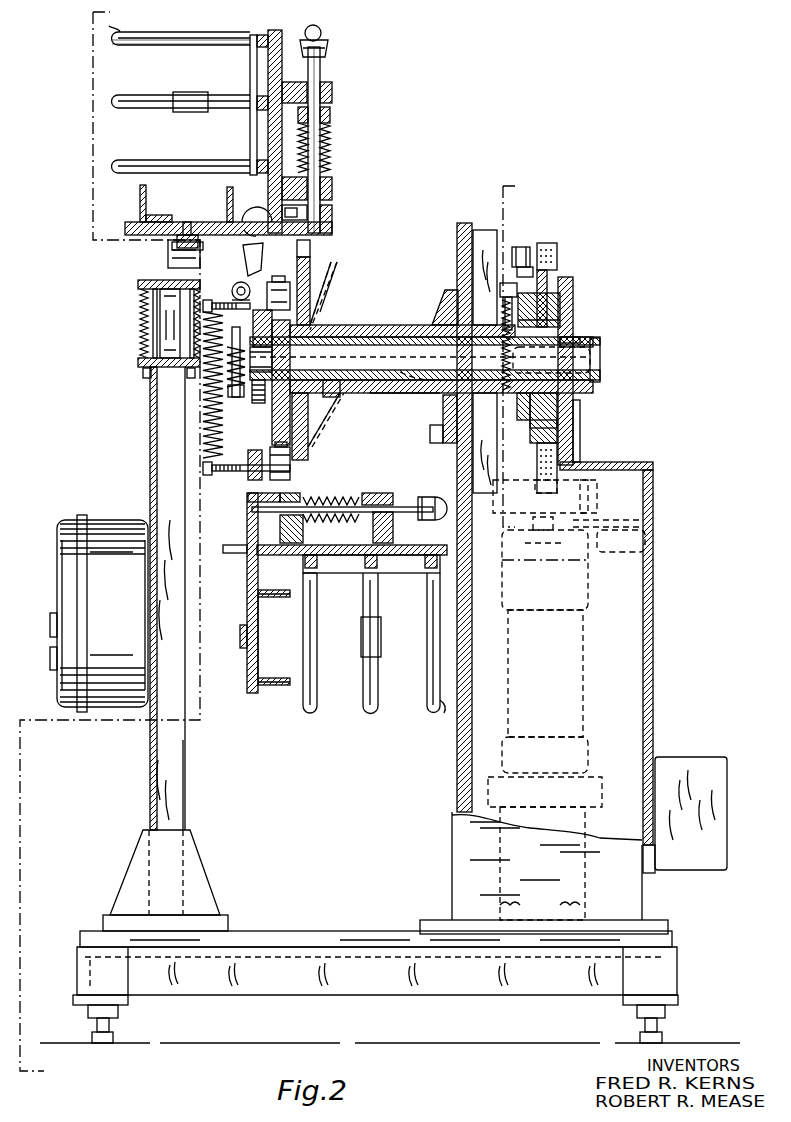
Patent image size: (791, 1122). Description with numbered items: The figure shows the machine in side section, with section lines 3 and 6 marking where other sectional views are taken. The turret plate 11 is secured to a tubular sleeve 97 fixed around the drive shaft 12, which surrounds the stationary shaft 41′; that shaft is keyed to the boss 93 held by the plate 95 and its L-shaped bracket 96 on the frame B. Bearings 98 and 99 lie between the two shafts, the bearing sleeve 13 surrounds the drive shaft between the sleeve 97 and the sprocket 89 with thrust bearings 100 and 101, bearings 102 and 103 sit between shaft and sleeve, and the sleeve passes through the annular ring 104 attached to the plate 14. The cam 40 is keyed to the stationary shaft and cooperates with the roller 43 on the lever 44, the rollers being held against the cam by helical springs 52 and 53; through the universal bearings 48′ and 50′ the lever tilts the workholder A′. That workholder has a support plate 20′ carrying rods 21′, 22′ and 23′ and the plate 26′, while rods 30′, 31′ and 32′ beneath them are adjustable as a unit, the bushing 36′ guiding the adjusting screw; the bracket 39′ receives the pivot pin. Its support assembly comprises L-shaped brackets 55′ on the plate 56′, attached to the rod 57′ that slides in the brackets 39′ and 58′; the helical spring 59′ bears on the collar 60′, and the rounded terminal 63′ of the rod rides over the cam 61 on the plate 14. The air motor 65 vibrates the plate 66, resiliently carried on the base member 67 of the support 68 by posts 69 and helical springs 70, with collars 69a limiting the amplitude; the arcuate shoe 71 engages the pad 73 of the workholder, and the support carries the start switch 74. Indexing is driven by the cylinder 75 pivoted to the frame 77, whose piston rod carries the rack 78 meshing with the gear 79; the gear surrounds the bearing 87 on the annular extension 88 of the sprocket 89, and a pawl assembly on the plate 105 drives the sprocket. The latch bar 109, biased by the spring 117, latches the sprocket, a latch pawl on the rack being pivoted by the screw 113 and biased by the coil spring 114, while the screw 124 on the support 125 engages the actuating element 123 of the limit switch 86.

The section line 3- 3 is at (44, 1067).
The section line 6- 6 is at (515, 523).
The turret plate 11 is at (310, 250).
The drive shaft 12 is at (368, 322).
The bearing sleeve 13 is at (400, 322).
The plate 14 is at (455, 260).
The support plate 20′ is at (275, 131).
The rod 21′ is at (265, 35).
The intermediate rod 22′ is at (266, 100).
The rod 23′ is at (266, 162).
The plate 26′ is at (151, 32).
The rod 30′ is at (152, 48).
The intermediate rod 31′ is at (154, 112).
The rod 32′ is at (188, 178).
The bushing 36′ is at (180, 94).
The bracket 39′ is at (332, 180).
The cam 40 is at (272, 432).
The stationary shaft 41′ is at (400, 393).
The roller 43 is at (283, 278).
The lever 44 is at (265, 356).
The bearing 48′ is at (234, 283).
The bearing 50′ is at (253, 210).
The helical spring 52 is at (214, 427).
The helical spring 53 is at (236, 349).
The L-shaped brackets 55′ is at (140, 214).
The plate 56′ is at (130, 226).
The rod 57′ is at (322, 64).
The bracket 58′ is at (334, 88).
The helical spring 59′ is at (330, 144).
The collar 60′ is at (330, 116).
The cam 61 is at (440, 299).
The rounded terminal 63′ is at (323, 32).
The motor 65 is at (160, 347).
The plate 66 is at (138, 281).
The base member 67 is at (138, 363).
The support 68 is at (150, 407).
The posts 69 is at (140, 308).
The collars 69a is at (143, 374).
The helical springs 70 is at (140, 328).
The arcuate shoe 71 is at (168, 250).
The pad 73 is at (186, 223).
The start switch 74 is at (124, 520).
The cylinder 75 is at (583, 668).
The frame 77 is at (602, 898).
The rack 78 is at (537, 466).
The gear 79 is at (560, 304).
The limit switch 86 is at (616, 553).
The bearing 87 is at (560, 320).
The annular extension 88 is at (531, 405).
The sprocket 89 is at (528, 418).
The boss 93 is at (598, 376).
The plate 95 is at (573, 278).
The L-shaped bracket 96 is at (580, 424).
The tubular sleeve 97 is at (323, 322).
The bearing 98 is at (326, 420).
The bearing 99 is at (519, 361).
The thrust bearing 100 is at (337, 397).
The thrust bearing 101 is at (502, 317).
The bearing 102 is at (388, 400).
The bearing 103 is at (488, 361).
The annular ring 104 is at (445, 398).
The plate 105 is at (530, 428).
The latch bar 109 is at (548, 277).
The pivot screw 113 is at (515, 244).
The coil spring 114 is at (542, 243).
The spring 117 is at (503, 294).
The actuating element 123 is at (651, 522).
The screw 124 is at (590, 489).
The support 125 is at (597, 501).
The workholder A′ is at (215, 22).
The frame B is at (653, 596).